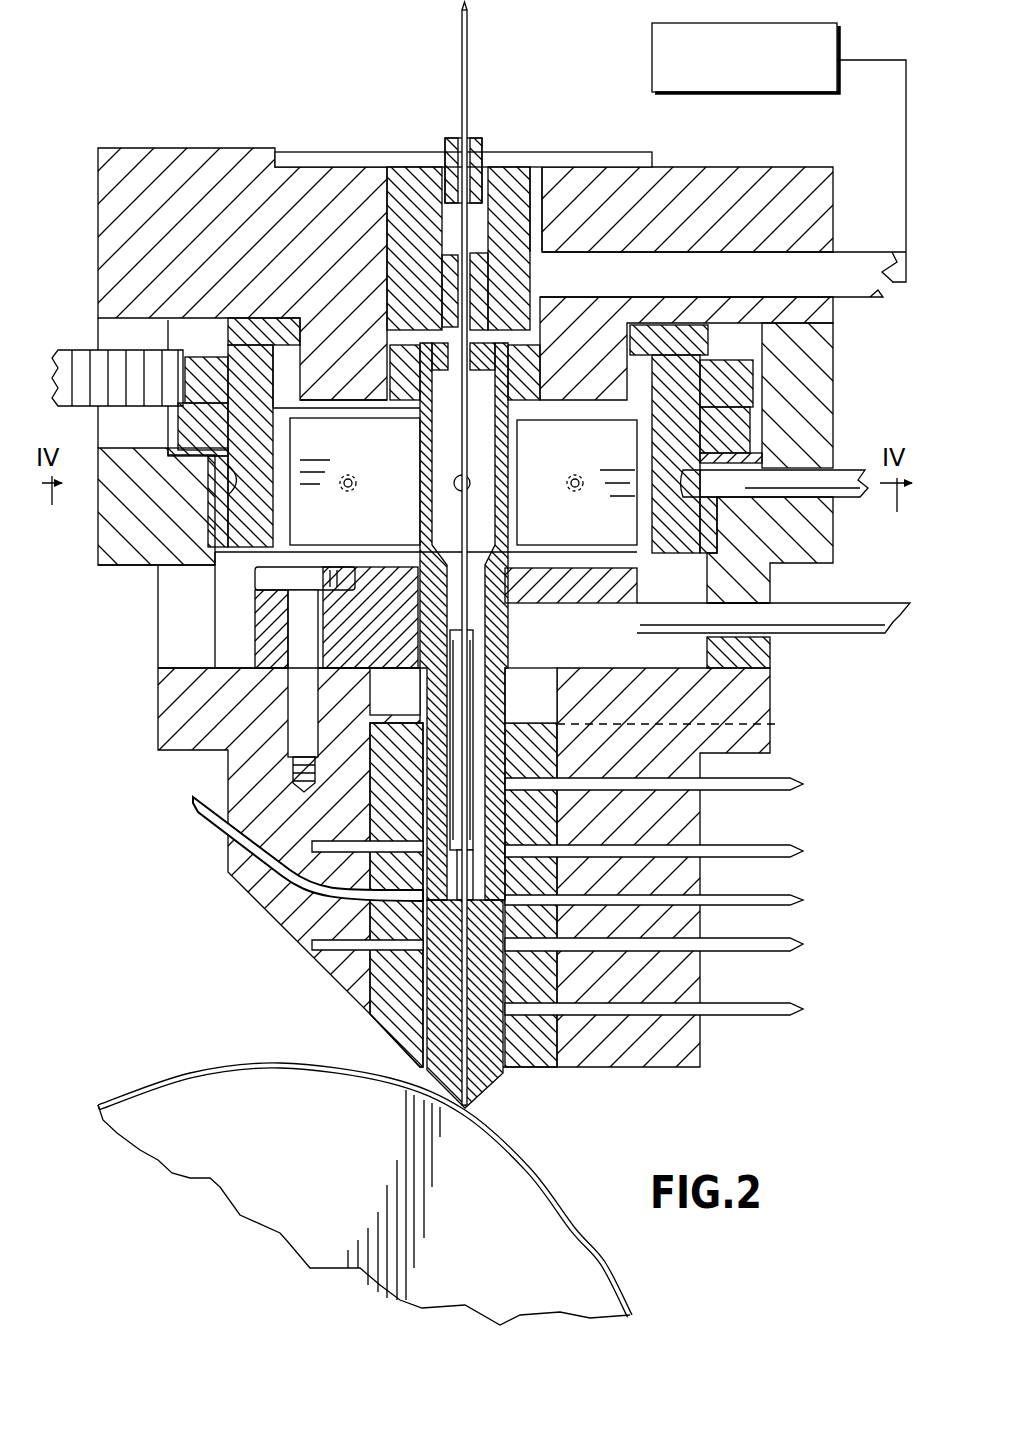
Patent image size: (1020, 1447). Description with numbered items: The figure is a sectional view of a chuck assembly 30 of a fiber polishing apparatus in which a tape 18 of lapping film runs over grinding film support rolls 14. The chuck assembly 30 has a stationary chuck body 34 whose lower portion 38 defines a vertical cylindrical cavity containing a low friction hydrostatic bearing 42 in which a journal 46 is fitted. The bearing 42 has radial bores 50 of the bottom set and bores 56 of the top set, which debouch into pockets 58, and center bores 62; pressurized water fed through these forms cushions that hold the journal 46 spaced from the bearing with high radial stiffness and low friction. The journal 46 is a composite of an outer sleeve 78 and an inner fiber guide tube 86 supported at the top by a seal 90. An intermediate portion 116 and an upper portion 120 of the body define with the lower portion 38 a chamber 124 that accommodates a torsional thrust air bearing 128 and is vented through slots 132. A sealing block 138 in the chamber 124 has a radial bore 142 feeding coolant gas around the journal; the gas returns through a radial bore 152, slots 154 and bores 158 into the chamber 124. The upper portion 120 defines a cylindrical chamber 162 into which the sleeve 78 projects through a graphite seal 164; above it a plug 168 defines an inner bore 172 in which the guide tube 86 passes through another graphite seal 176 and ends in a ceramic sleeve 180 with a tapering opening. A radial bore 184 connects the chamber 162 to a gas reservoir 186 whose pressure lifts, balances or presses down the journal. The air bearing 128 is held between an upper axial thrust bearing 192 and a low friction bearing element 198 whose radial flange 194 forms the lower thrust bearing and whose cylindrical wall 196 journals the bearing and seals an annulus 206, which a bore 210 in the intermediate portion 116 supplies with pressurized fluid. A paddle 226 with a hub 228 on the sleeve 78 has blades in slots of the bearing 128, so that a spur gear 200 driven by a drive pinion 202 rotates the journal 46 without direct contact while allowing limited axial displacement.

The grinding film support roll 14 is at (170, 1163).
The tape of lapping film 18 is at (192, 1070).
The chuck assembly 30 is at (193, 873).
The chuck body 34 is at (157, 705).
The lower portion of the chuck body 38 is at (672, 1062).
The low friction bearing 42 is at (535, 1063).
The journal 46 is at (482, 1095).
The bores of the bottom set 50 is at (530, 1005).
The bores of the top set 56 is at (530, 778).
The pockets 58 is at (505, 805).
The bores of the center set 62 is at (535, 893).
The outer sleeve 78 is at (415, 445).
The inner fiber guide tube 86 is at (510, 508).
The seal 90 is at (430, 345).
The intermediate portion of the chuck body 116 is at (98, 533).
The upper portion of the chuck body 120 is at (128, 158).
The chamber 124 is at (725, 598).
The torsional thrust air bearing 128 is at (580, 412).
The slots 132 is at (175, 632).
The sealing block 138 is at (740, 645).
The radial bore 142 is at (877, 603).
The radial bore 152 is at (497, 700).
The slots 154 is at (770, 712).
The bores 158 is at (513, 470).
The cylindrical chamber 162 is at (540, 297).
The graphite seal 164 is at (405, 372).
The plug 168 is at (415, 185).
The inner bore 172 is at (505, 228).
The graphite seal 176 is at (442, 290).
The ceramic sleeve 180 is at (478, 140).
The radial bore 184 is at (868, 252).
The gas reservoir 186 is at (652, 44).
The upper axial thrust bearing 192 is at (680, 340).
The radial flange 194 is at (790, 440).
The cylindrical wall 196 is at (713, 530).
The low friction bearing element 198 is at (213, 530).
The spur gear 200 is at (195, 357).
The drive pinion 202 is at (73, 350).
The annulus 206 is at (228, 480).
The bore 210 is at (845, 468).
The paddle 226 is at (622, 522).
The hub 228 is at (415, 512).